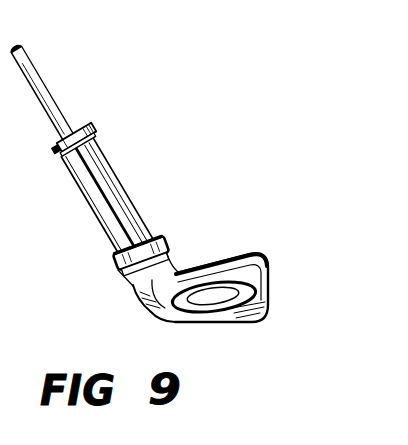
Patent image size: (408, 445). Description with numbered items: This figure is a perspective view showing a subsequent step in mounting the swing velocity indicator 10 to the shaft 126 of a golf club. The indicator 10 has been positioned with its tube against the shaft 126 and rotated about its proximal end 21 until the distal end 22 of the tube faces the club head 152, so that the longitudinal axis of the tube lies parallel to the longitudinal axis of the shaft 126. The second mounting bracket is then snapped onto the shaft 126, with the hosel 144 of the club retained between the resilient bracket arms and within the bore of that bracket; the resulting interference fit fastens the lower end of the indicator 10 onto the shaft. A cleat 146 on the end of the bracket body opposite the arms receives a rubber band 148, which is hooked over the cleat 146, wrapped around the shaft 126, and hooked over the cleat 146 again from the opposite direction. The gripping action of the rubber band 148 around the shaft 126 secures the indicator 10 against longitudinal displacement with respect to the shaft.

The club assembly 10 is at (143, 163).
The proximal end 21 is at (96, 128).
The distal end 22 is at (114, 268).
The golf club shaft 126 is at (43, 101).
The hosel 144 is at (128, 282).
The cleat 146 is at (151, 245).
The rubber band 148 is at (153, 272).
The club head 152 is at (237, 262).